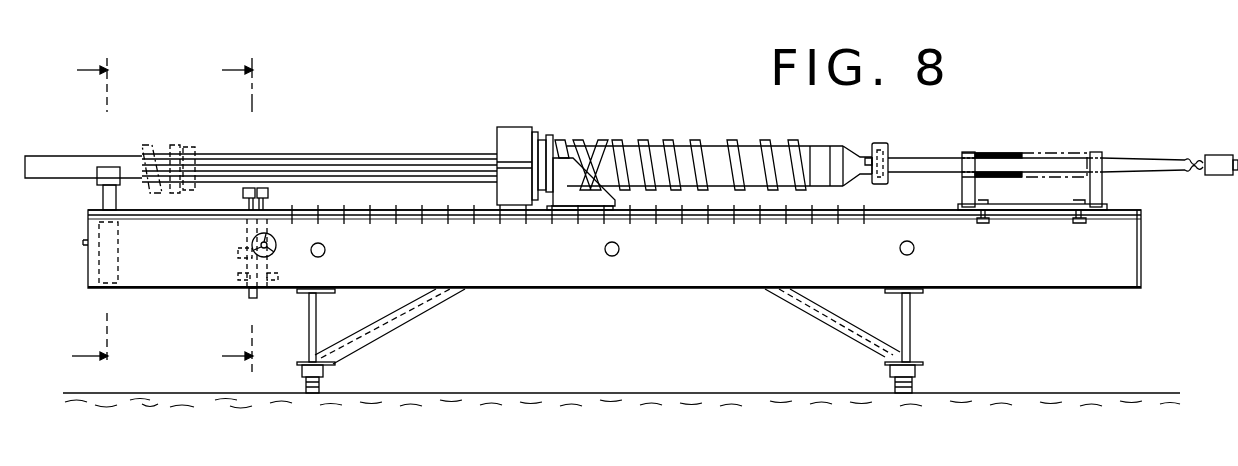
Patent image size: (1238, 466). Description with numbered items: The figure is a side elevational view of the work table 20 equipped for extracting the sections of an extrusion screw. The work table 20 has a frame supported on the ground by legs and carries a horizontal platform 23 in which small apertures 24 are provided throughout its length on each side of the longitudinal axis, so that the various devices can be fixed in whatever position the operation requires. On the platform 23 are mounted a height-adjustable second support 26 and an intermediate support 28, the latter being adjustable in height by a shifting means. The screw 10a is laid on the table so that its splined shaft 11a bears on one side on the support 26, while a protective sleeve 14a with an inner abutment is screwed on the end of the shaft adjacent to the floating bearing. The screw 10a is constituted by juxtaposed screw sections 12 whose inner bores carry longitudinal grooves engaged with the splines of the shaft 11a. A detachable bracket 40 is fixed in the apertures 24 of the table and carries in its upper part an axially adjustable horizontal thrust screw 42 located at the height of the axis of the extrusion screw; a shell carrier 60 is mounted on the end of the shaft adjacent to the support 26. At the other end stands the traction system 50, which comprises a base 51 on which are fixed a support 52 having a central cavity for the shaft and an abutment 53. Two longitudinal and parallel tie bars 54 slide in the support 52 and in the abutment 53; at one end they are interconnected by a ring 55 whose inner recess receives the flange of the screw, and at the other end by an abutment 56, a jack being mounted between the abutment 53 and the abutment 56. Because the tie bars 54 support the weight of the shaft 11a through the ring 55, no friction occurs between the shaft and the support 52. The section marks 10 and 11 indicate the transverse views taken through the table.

The section line 10- 10 is at (107, 213).
The section line 11- 11 is at (253, 216).
The protective sleeve 14a is at (133, 162).
The second support 26 is at (103, 197).
The intermediate support 28 is at (269, 191).
The screw 10a is at (391, 152).
The shaft 11a is at (323, 163).
The shell carrier 60 is at (528, 123).
The horizontal thrust screw 42 is at (545, 153).
The bracket 40 is at (562, 214).
The screw section 12 is at (703, 163).
The small aperture 24 is at (676, 214).
The horizontal platform 23 is at (848, 216).
The work table 20 is at (304, 305).
The ring 55 is at (885, 144).
The traction system 50 is at (1040, 120).
The support 52 is at (964, 194).
The abutment 53 is at (1100, 190).
The base 51 is at (1037, 210).
The tie bar 54 is at (1140, 160).
The abutment 56 is at (1217, 160).